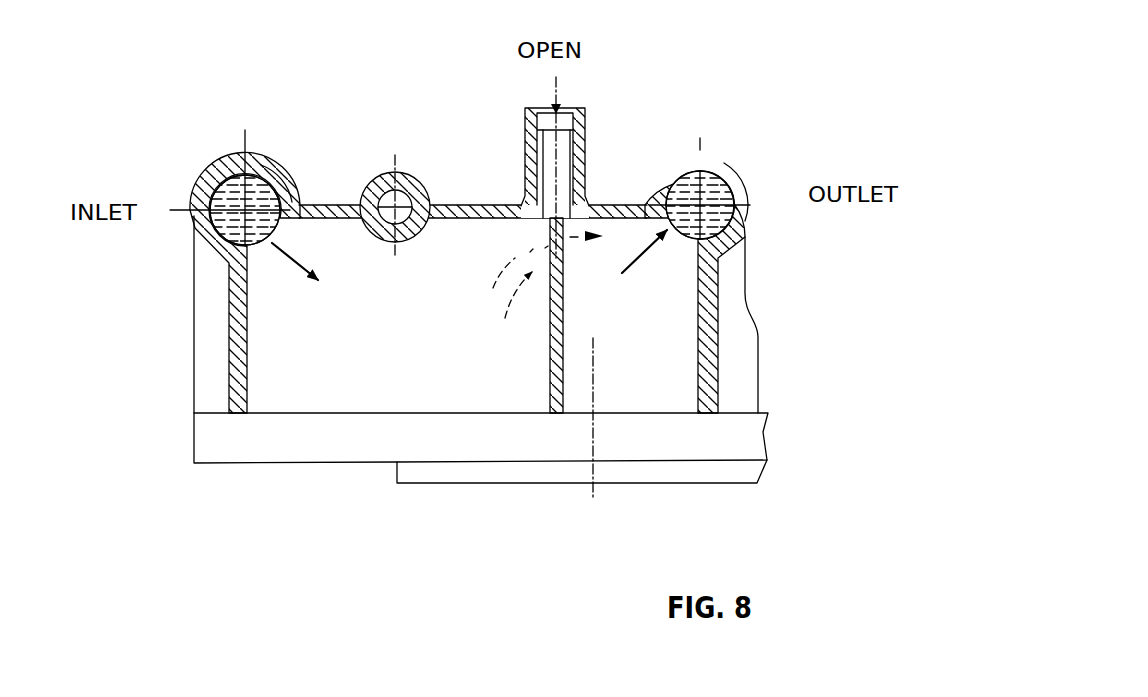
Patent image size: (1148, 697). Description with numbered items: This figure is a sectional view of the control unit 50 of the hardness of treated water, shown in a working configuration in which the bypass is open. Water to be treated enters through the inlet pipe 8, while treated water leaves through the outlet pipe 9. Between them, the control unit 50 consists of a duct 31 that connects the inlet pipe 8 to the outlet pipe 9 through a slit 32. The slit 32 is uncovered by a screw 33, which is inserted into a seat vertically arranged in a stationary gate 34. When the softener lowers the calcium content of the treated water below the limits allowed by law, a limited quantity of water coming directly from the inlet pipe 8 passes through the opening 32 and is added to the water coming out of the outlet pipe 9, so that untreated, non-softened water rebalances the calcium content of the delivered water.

The control unit 50 is at (283, 95).
The inlet pipe 8 is at (187, 155).
The outlet pipe 9 is at (748, 160).
The duct 31 is at (460, 268).
The slit 32 is at (527, 238).
The screw 33 is at (560, 183).
The stationary gate 34 is at (549, 372).